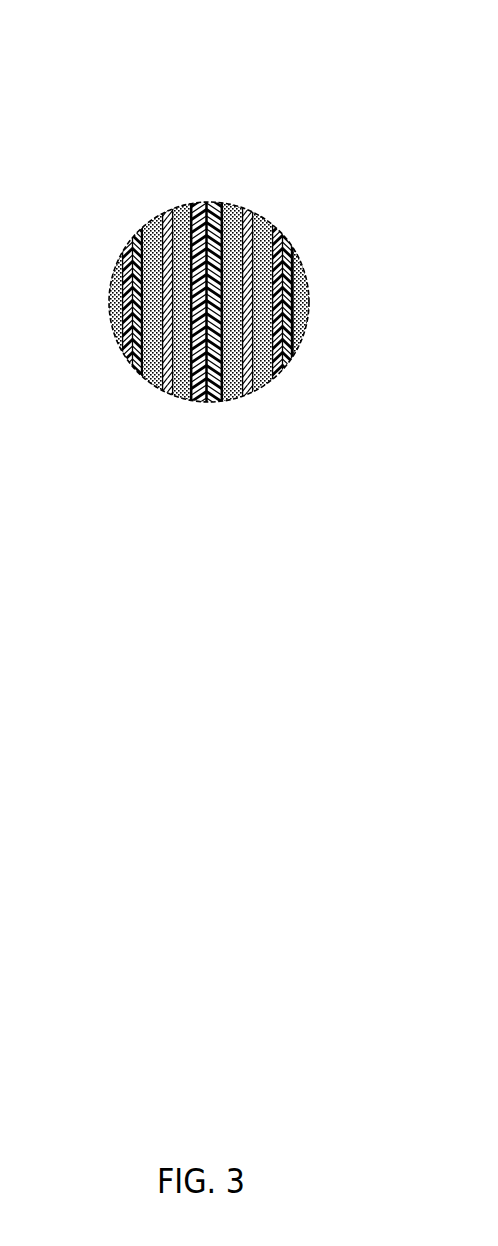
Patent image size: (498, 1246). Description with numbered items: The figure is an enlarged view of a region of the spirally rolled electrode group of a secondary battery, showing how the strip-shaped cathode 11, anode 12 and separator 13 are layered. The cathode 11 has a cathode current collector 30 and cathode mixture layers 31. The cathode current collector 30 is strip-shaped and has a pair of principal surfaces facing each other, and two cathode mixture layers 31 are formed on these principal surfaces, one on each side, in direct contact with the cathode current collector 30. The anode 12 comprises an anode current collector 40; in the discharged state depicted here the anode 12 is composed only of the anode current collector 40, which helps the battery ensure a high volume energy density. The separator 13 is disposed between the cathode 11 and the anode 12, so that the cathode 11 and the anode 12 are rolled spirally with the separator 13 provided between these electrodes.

The cathode 11 is at (205, 128).
The cathode current collector 30 is at (168, 210).
The cathode mixture layer 31 is at (153, 218).
The anode 12 is at (225, 259).
The anode current collector 40 is at (225, 259).
The separator 13 is at (197, 402).